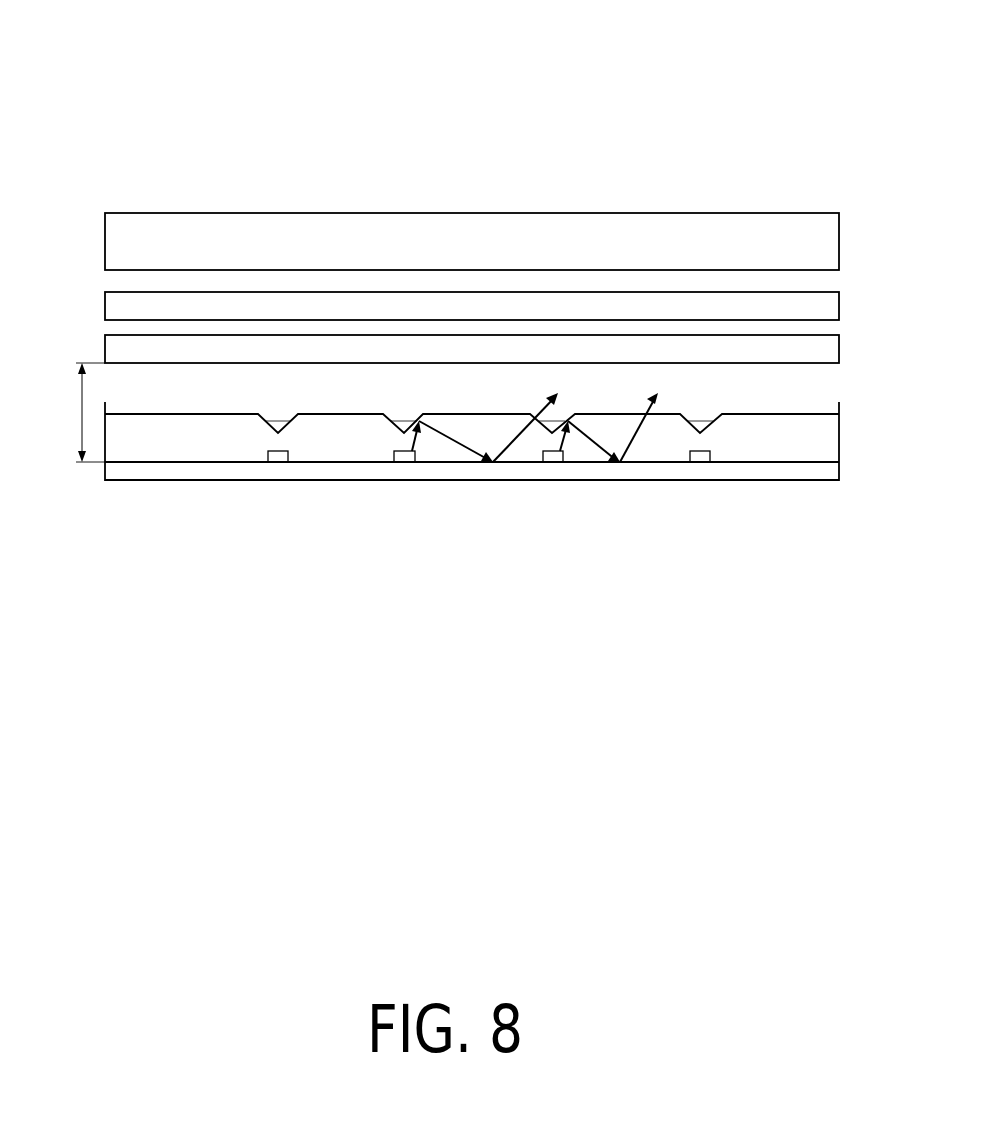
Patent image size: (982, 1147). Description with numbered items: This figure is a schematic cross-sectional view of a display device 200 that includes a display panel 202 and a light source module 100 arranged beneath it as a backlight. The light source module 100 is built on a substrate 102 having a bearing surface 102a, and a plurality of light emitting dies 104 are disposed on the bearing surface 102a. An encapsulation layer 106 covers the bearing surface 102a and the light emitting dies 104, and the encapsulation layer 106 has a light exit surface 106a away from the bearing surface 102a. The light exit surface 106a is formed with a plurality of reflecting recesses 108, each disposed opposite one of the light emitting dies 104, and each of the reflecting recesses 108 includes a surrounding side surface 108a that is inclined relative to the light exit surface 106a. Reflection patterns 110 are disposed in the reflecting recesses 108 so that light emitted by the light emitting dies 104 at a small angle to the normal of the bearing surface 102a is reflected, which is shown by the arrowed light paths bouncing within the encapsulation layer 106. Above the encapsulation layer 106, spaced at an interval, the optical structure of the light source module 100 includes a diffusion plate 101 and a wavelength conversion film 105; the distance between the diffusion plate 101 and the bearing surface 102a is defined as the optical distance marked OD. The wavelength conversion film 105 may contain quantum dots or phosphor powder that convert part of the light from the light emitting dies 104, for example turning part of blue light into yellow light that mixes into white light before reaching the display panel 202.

The display device 200 is at (118, 72).
The display panel 202 is at (330, 233).
The light source module 100 is at (98, 278).
The wavelength conversion film 105 is at (115, 308).
The diffusion plate 101 is at (117, 350).
The substrate 102 is at (469, 534).
The bearing surface 102a is at (173, 460).
The light emitting dies 104 is at (278, 462).
The encapsulation layer 106 is at (514, 494).
The light exit surface 106a is at (777, 413).
The reflecting recesses 108 is at (594, 494).
The surrounding side surface 108a is at (511, 523).
The reflection patterns 110 is at (397, 430).